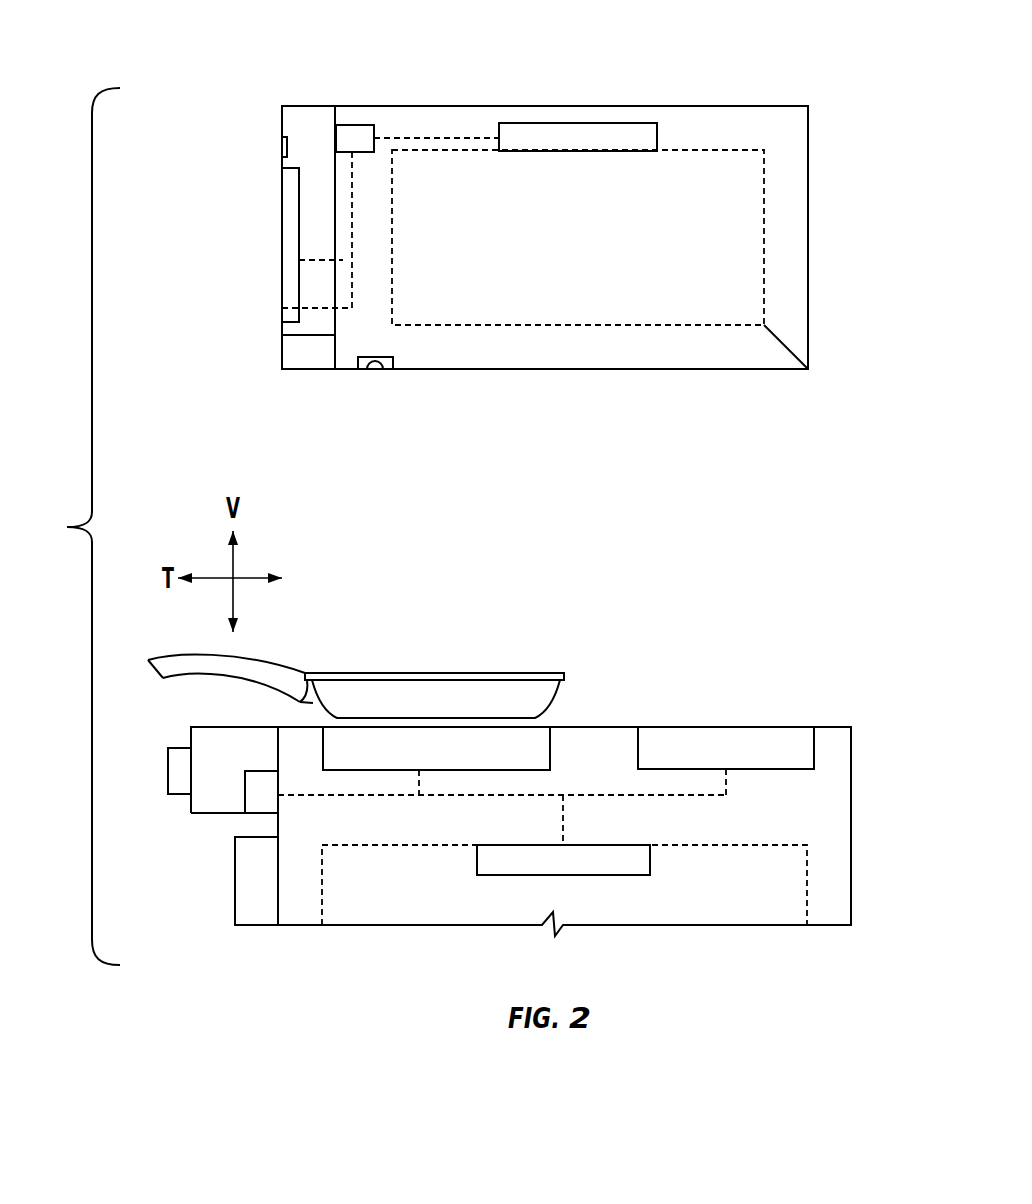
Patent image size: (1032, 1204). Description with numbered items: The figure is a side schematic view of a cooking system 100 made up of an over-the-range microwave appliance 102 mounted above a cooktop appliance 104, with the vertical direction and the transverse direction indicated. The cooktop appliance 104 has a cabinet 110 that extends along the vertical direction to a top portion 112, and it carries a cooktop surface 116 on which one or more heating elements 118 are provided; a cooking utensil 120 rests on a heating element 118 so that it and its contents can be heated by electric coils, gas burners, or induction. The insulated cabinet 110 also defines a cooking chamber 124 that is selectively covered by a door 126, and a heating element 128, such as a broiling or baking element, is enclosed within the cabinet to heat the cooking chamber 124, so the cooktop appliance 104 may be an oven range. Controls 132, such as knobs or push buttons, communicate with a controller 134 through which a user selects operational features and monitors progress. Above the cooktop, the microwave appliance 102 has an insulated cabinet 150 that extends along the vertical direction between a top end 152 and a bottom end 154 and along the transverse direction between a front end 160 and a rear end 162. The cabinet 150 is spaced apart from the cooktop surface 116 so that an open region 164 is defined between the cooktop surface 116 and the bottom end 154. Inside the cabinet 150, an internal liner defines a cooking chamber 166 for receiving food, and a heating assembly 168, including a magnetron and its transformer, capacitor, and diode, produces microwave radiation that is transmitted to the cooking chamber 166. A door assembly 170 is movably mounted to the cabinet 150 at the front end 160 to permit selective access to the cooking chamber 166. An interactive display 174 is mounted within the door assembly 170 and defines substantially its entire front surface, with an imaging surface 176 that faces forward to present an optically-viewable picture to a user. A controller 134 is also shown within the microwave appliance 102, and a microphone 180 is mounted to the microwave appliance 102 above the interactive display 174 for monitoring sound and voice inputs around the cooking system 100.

The cooking system 100 is at (73, 526).
The microwave appliance 102 is at (812, 197).
The cooktop appliance 104 is at (855, 818).
The cabinet 110 is at (828, 888).
The top portion 112 is at (830, 726).
The cooktop surface 116 is at (595, 724).
The heating element 118 is at (738, 737).
The cooking utensil 120 is at (453, 711).
The cooking chamber 124 is at (748, 893).
The door 126 is at (248, 878).
The heating element 128 is at (486, 862).
The controls 132 is at (173, 777).
The controller 134 is at (360, 133).
The cabinet 150 is at (760, 358).
The top end 152 is at (693, 104).
The bottom end 154 is at (715, 371).
The front end 160 is at (336, 357).
The rear end 162 is at (812, 343).
The open region 164 is at (542, 533).
The cooking chamber 166 is at (590, 248).
The heating assembly 168 is at (580, 137).
The door assembly 170 is at (288, 119).
The interactive display 174 is at (287, 216).
The imaging surface 176 is at (281, 298).
The microphone 180 is at (283, 145).